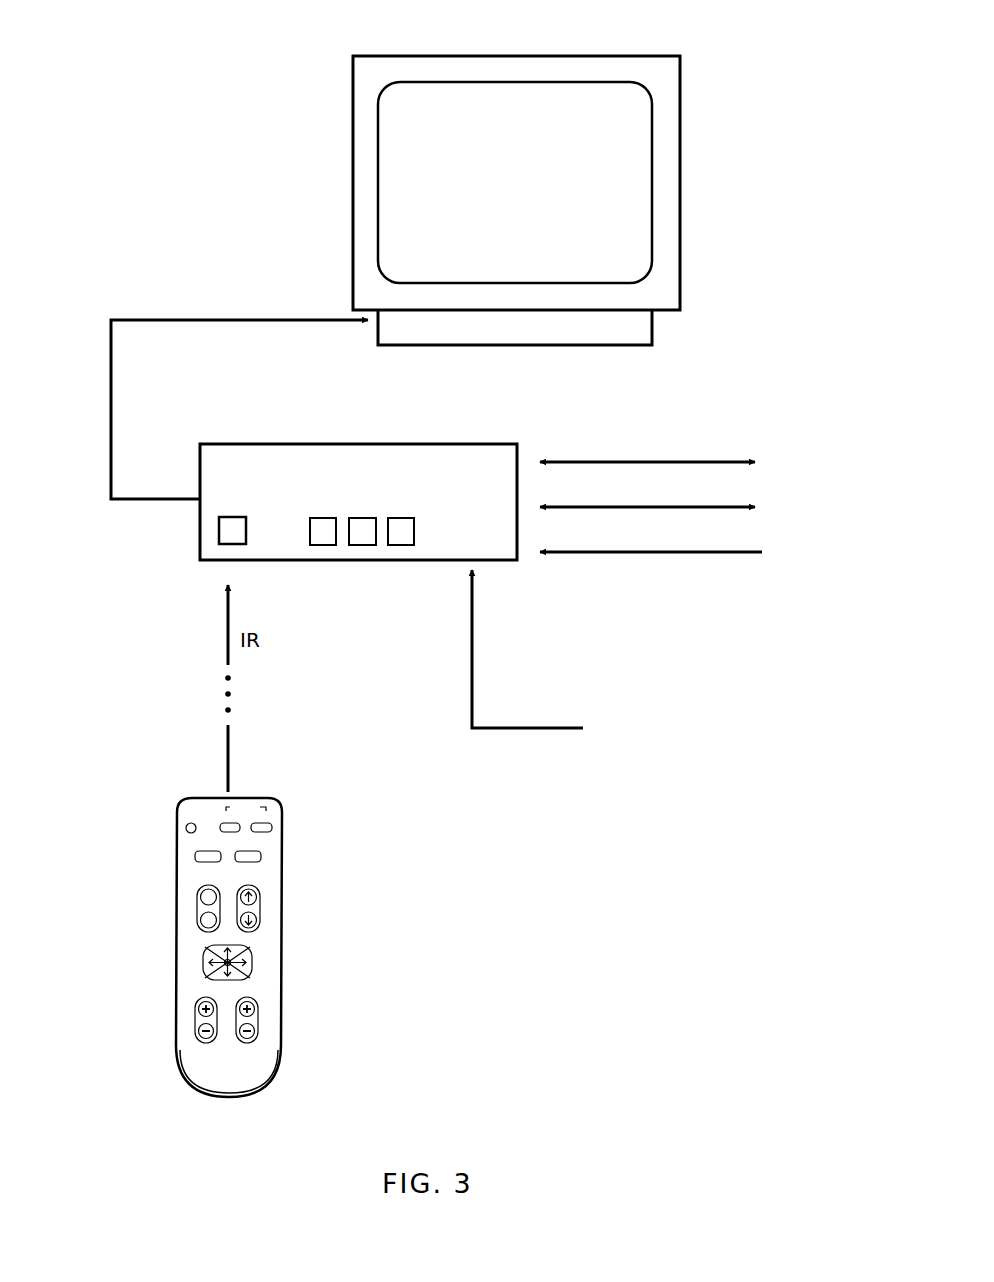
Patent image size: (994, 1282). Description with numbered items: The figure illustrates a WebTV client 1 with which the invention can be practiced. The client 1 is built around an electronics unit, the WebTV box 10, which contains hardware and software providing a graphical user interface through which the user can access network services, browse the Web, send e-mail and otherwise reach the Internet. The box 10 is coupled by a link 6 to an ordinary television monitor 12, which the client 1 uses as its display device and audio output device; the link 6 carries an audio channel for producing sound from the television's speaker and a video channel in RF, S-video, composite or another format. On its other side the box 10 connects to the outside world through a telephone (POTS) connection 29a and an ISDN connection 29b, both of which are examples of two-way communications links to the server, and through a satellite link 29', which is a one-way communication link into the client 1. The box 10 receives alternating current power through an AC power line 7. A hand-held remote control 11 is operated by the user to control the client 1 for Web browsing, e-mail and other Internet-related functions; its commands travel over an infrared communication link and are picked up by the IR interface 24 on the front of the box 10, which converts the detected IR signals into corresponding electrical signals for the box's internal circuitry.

The client 1 is at (726, 49).
The television monitor 12 is at (621, 274).
The link 6 is at (111, 397).
The electronics unit 10 is at (508, 546).
The IR interface 24 is at (231, 537).
The telephone connection 29a is at (590, 461).
The ISDN connection 29b is at (707, 506).
The satellite link 29' is at (651, 561).
The AC power line 7 is at (500, 729).
The remote control 11 is at (235, 1082).